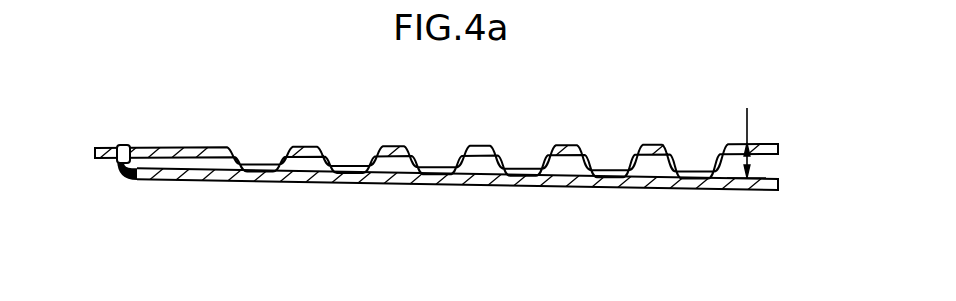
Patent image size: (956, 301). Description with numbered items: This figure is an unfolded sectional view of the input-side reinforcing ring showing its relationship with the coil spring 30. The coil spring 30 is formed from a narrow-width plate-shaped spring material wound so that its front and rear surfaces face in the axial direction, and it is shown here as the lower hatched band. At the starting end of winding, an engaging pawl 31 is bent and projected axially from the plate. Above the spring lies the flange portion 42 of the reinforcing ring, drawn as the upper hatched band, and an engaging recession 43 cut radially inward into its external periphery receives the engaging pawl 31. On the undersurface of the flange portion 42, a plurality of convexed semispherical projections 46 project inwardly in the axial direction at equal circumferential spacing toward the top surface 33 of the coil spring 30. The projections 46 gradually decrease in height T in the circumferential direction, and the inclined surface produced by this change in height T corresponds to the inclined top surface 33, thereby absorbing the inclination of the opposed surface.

The coil spring 30 is at (197, 182).
The engaging pawl 31 is at (122, 145).
The end face 33 is at (307, 167).
The flange portion 42 is at (207, 147).
The engaging recession 43 is at (151, 144).
The convexed semispherical projections 46 is at (268, 160).
The height T is at (746, 128).